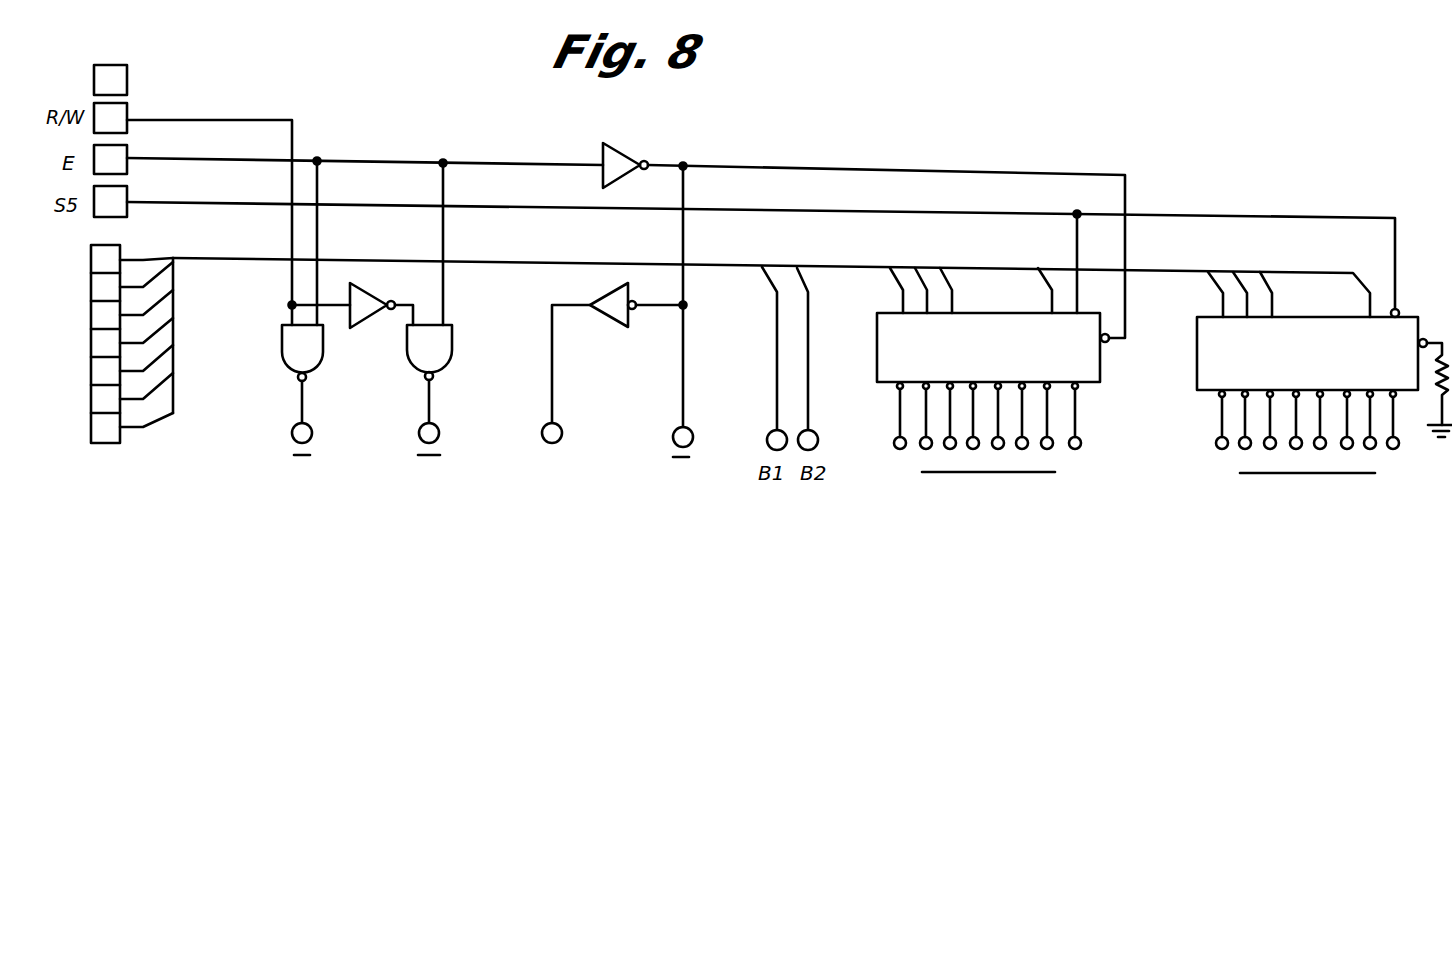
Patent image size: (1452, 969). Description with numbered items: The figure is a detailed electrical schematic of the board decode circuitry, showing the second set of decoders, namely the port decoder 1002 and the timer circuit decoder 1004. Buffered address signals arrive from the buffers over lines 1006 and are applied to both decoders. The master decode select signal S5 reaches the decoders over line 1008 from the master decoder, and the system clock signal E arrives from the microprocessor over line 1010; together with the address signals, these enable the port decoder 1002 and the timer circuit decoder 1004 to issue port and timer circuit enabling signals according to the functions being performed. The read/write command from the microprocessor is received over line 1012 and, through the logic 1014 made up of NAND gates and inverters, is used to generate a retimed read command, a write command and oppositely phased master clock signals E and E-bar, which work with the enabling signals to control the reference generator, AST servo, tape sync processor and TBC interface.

The port decoder 1002 is at (1105, 385).
The timer circuit decoder 1004 is at (1196, 361).
The lines 1006 is at (162, 424).
The line 1008 is at (266, 208).
The line 1010 is at (428, 156).
The line 1012 is at (281, 112).
The logic 1014 is at (508, 470).